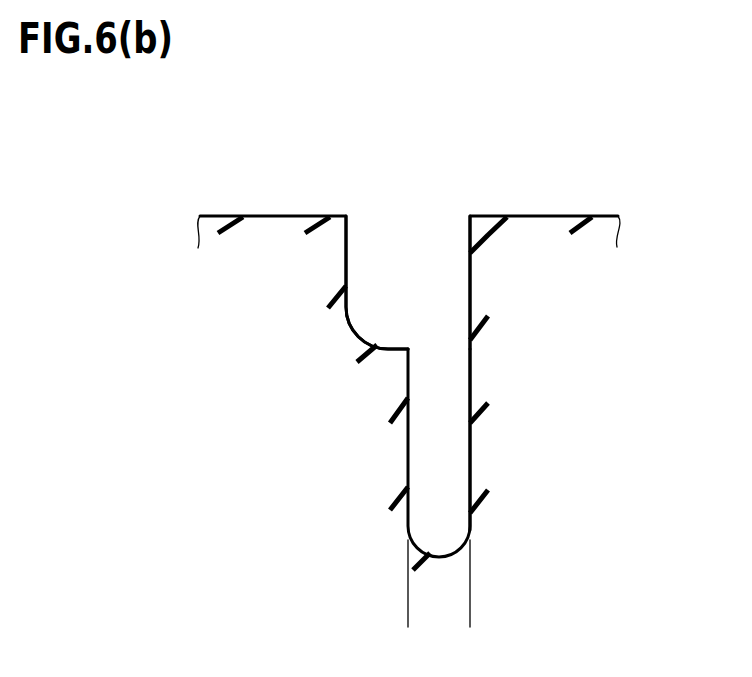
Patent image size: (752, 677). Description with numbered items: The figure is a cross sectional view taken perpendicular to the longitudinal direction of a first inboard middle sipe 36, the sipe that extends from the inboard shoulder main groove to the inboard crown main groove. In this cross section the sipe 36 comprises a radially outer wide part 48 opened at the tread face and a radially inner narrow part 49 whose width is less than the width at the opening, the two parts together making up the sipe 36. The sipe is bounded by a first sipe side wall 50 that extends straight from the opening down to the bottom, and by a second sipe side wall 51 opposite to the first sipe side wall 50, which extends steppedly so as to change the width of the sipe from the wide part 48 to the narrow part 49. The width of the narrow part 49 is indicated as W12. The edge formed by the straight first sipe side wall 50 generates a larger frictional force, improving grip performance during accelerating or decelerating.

The first inboard middle sipe 36 is at (518, 393).
The radially outer wide part 48 is at (420, 308).
The radially inner narrow part 49 is at (445, 472).
The first sipe side wall 50 is at (470, 273).
The second sipe side wall 51 is at (348, 260).
The groove width W12 is at (470, 622).